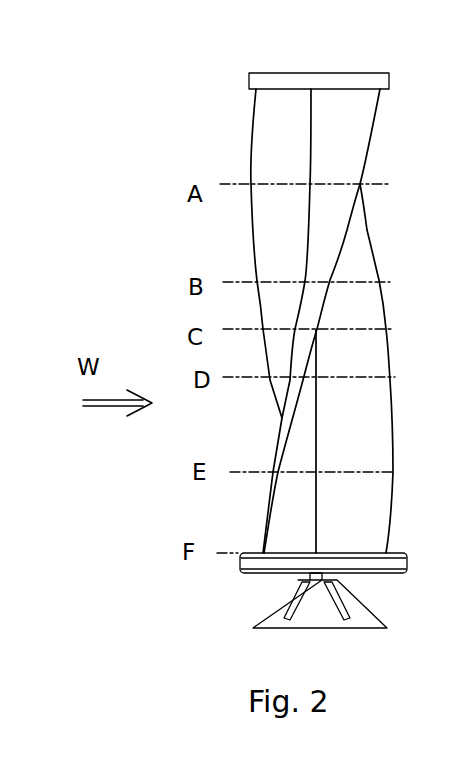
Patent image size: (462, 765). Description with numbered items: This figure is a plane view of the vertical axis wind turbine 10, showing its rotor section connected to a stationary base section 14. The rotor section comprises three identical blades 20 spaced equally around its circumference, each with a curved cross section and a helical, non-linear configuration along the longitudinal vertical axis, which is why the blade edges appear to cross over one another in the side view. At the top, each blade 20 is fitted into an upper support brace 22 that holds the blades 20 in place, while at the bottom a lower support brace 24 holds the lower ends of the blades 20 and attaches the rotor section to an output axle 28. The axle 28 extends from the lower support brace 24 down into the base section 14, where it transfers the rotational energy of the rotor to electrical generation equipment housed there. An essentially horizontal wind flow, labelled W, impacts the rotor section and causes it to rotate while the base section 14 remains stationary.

The vertical axis wind turbine 10 is at (150, 140).
The upper support brace 22 is at (387, 73).
The blades 20 is at (357, 139).
The lower support brace 24 is at (242, 563).
The axle 28 is at (322, 576).
The base section 14 is at (255, 578).